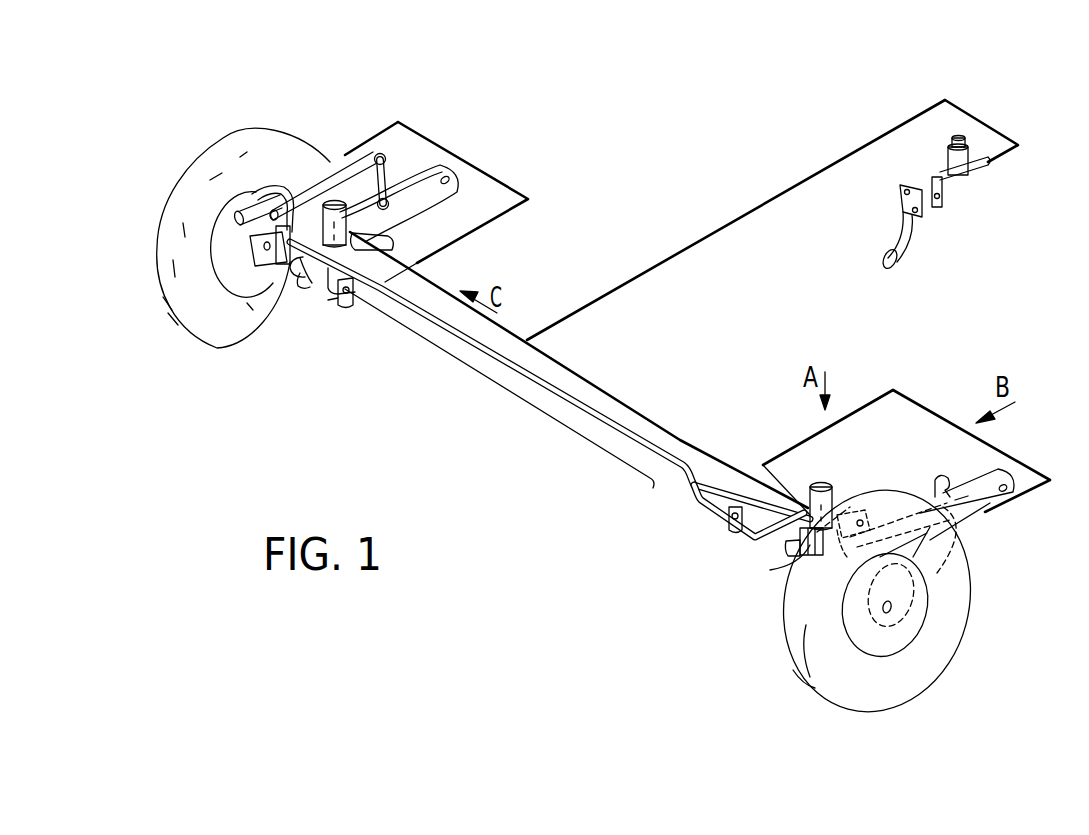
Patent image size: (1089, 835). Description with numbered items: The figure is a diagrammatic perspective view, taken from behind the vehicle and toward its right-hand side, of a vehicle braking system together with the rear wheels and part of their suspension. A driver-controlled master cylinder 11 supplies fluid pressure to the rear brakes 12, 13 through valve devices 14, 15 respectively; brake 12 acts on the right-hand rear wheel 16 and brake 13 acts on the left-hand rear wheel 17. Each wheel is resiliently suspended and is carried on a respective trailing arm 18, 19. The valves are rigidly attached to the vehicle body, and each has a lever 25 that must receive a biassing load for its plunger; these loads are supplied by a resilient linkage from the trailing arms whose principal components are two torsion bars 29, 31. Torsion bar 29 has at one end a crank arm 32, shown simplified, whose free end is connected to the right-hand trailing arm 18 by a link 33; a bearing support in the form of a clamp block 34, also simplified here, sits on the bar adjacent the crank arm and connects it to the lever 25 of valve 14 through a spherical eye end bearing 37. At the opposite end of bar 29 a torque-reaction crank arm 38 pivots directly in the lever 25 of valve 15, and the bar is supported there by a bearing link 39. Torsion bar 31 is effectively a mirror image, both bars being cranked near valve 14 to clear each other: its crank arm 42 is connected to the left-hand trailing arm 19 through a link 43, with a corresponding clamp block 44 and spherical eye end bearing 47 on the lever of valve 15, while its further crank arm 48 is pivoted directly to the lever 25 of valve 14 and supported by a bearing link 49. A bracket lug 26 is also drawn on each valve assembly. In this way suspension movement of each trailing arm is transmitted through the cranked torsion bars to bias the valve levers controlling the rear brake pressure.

The master cylinder 11 is at (965, 187).
The rear brake 12 is at (930, 614).
The rear brake 13 is at (240, 277).
The valve device 14 is at (842, 488).
The valve device 15 is at (340, 204).
The right-hand rear wheel 16 is at (917, 657).
The left-hand rear wheel 17 is at (205, 332).
The trailing arm 18 is at (990, 503).
The trailing arm 19 is at (440, 165).
The lever 25 is at (310, 263).
The bracket lug 26 is at (352, 302).
The torsion bar 29 is at (650, 481).
The torsion bar 31 is at (643, 436).
The crank arm 32 is at (933, 497).
The link 33 is at (967, 493).
The clamp block 34 is at (790, 565).
The spherical eye end bearing 37 is at (786, 546).
The crank arm 38 is at (375, 255).
The bearing link 39 is at (347, 307).
The crank arm 42 is at (356, 158).
The link 43 is at (396, 166).
The clamp block 44 is at (248, 253).
The spherical eye end bearing 47 is at (287, 267).
The crank arm 48 is at (777, 493).
The bearing link 49 is at (729, 531).